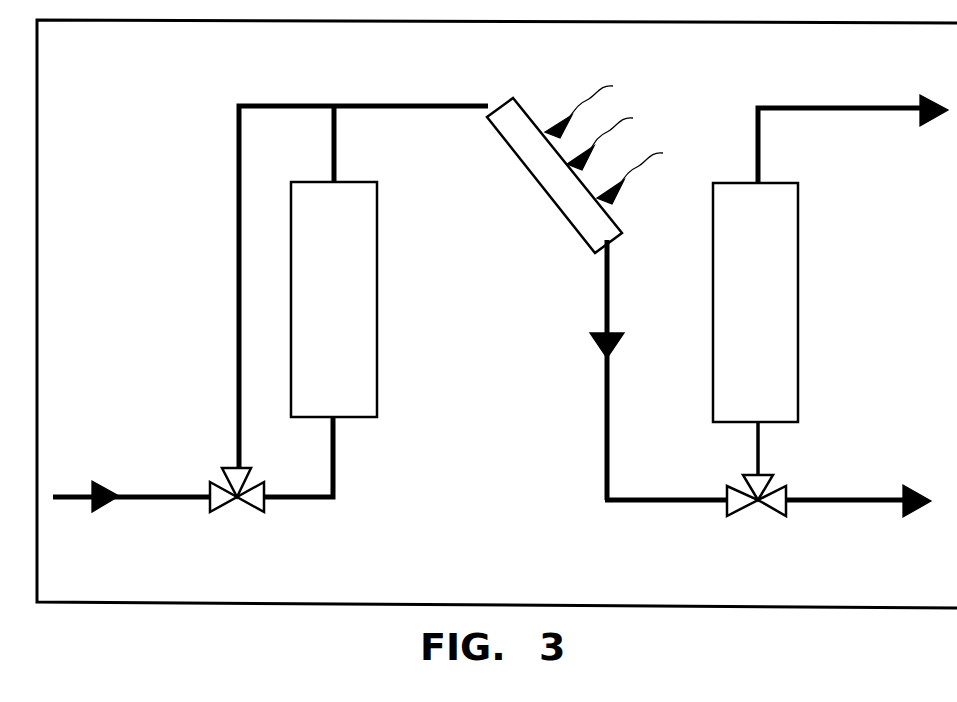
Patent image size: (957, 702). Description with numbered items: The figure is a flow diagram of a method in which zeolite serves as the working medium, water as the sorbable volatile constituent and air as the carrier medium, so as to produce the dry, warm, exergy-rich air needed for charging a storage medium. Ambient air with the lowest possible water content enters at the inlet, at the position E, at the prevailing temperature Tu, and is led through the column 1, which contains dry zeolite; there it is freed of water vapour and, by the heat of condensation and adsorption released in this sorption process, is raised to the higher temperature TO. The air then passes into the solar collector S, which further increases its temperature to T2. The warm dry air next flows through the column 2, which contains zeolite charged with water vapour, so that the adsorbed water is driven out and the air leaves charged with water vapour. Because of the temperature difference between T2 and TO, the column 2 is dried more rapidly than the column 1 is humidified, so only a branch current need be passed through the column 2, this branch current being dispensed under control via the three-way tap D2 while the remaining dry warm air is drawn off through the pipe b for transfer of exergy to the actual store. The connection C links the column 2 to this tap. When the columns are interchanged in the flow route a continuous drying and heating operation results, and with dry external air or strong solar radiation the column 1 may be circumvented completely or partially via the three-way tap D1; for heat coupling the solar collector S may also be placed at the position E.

The column 1 is at (334, 299).
The column 2 is at (755, 302).
The solar collector S is at (549, 180).
The three-way tap D1 is at (246, 510).
The three-way tap D2 is at (766, 514).
The position E is at (122, 493).
The connecting conduit C is at (770, 449).
The pipe b is at (879, 505).
The temperature T_o TO is at (358, 85).
The temperature T_u Tu is at (157, 477).
The temperature T_2 T2 is at (761, 482).